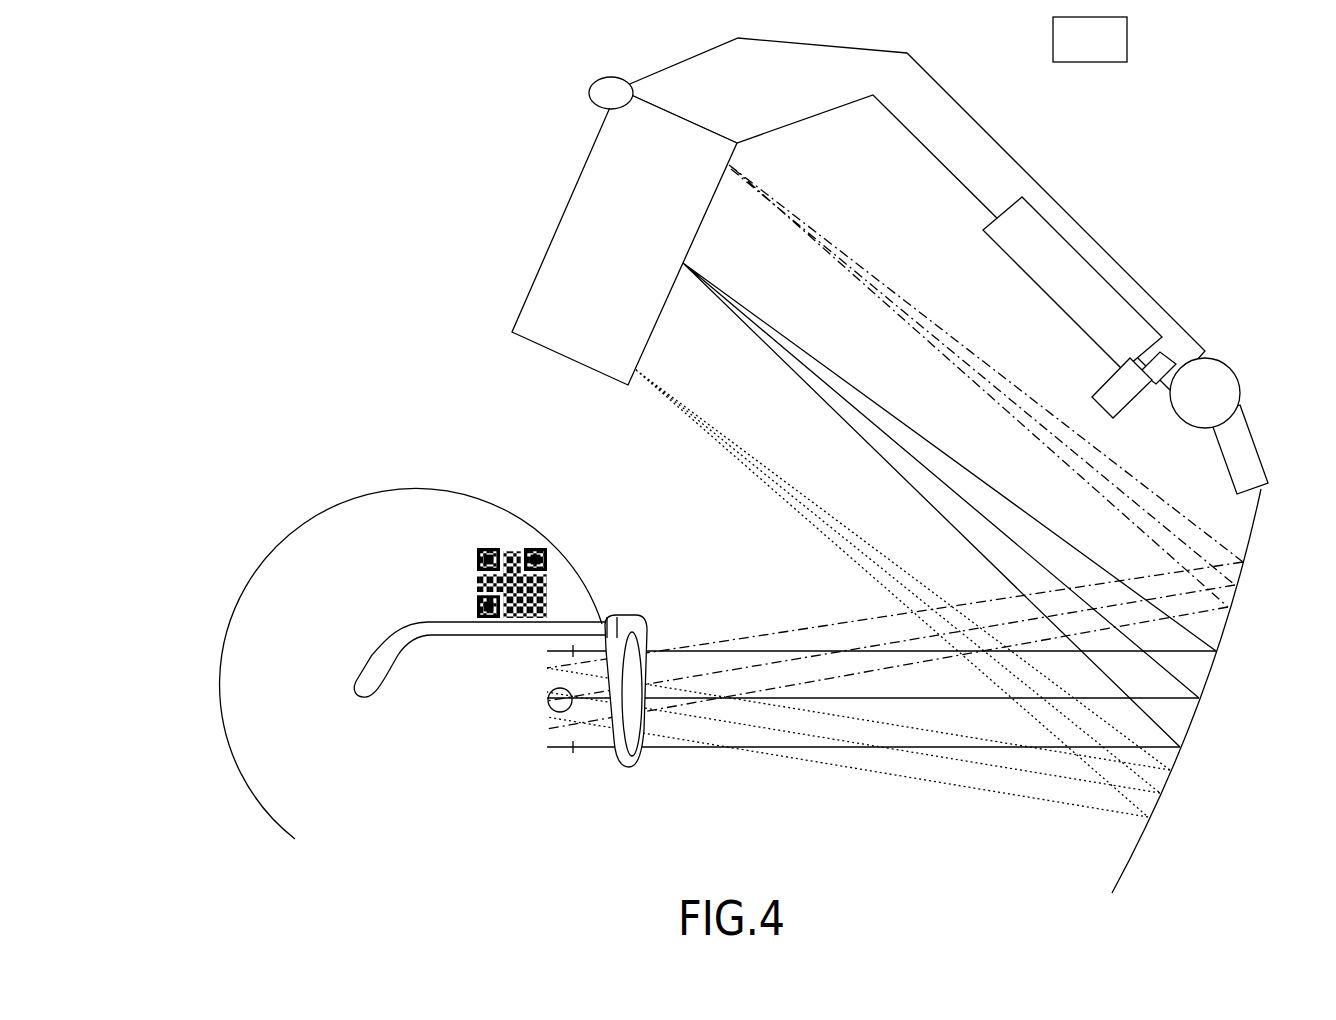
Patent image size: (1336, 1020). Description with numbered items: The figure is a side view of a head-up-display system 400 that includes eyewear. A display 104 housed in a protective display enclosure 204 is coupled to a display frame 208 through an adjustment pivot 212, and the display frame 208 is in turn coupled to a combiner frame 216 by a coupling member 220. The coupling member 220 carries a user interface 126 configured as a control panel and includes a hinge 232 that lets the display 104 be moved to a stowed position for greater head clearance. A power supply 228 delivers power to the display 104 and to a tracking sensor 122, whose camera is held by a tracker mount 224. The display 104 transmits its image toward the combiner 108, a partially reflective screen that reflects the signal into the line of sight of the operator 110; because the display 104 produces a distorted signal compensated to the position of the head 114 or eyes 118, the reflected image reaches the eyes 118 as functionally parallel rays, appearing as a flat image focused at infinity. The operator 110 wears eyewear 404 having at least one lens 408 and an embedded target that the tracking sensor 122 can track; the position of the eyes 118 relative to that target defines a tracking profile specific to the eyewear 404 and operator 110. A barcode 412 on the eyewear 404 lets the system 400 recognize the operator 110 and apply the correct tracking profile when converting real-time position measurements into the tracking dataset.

The system 400 is at (276, 102).
The display 104 is at (561, 237).
The protective display enclosure 204 is at (561, 237).
The display frame 208 is at (568, 170).
The adjustment pivot 212 is at (598, 80).
The coupling member 220 is at (990, 142).
The power supply 228 is at (960, 107).
The user interface 126 is at (1105, 285).
The tracking sensor 122 is at (1198, 353).
The tracker mount 224 is at (1150, 362).
The hinge 232 is at (1220, 372).
The combiner frame 216 is at (1260, 446).
The combiner 108 is at (1224, 705).
The operator 110 is at (218, 768).
The head 114 is at (259, 646).
The eyes 118 is at (531, 676).
The eyewear 404 is at (385, 629).
The lens 408 is at (624, 779).
The barcode 412 is at (463, 543).